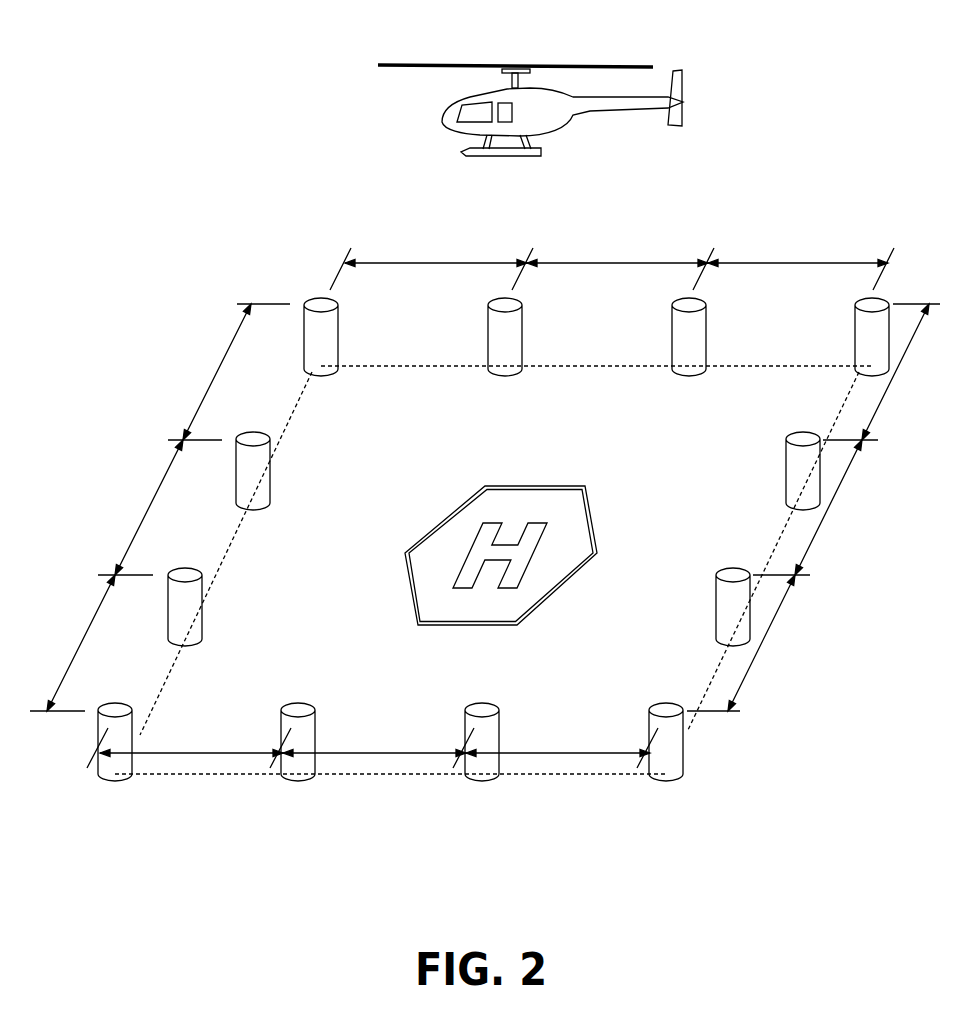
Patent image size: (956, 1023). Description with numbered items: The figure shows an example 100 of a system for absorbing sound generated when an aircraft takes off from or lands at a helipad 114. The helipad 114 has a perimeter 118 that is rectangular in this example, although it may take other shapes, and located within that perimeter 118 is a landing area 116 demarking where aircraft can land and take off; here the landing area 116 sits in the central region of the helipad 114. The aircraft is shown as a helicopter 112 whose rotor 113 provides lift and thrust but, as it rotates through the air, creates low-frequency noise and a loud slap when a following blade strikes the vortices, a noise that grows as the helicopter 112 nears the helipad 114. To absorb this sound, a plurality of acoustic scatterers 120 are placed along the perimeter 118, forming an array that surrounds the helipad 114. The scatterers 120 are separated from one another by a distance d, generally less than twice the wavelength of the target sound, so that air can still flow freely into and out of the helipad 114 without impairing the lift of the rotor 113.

The example 100 is at (790, 145).
The helicopter 112 is at (678, 83).
The rotor 113 is at (580, 63).
The helipad 114 is at (687, 676).
The landing area 116 is at (540, 604).
The perimeter 118 is at (296, 420).
The acoustic scatterers 120 is at (862, 336).